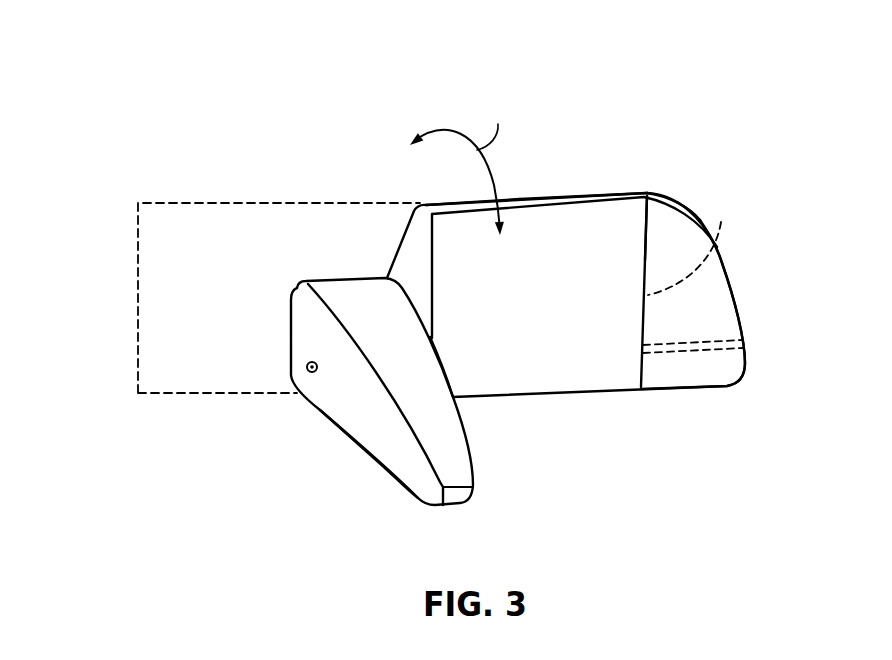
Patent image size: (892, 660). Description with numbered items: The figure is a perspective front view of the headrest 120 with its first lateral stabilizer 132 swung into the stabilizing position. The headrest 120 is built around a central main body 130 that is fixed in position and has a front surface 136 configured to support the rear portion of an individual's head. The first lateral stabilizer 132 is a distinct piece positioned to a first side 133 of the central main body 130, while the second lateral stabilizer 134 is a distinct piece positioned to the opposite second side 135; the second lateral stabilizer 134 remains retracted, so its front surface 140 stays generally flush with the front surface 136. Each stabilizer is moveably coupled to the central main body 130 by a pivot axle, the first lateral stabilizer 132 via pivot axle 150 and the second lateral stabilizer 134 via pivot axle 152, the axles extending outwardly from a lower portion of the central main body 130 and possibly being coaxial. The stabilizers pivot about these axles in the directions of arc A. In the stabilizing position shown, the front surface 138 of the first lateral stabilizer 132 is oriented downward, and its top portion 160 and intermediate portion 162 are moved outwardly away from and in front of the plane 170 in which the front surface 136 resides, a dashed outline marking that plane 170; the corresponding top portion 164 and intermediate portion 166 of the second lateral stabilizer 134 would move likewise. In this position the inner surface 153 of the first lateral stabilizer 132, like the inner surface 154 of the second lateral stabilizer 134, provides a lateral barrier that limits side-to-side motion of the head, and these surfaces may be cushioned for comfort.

The headrest 120 is at (243, 139).
The central main body 130 is at (578, 377).
The first lateral stabilizer 132 is at (343, 420).
The first side 133 is at (435, 257).
The second lateral stabilizer 134 is at (728, 375).
The second side 135 is at (640, 238).
The front surface 136 is at (557, 220).
The front surface 138 is at (380, 477).
The front surface 140 is at (710, 285).
The pivot axle 150 is at (307, 365).
The pivot axle 152 is at (717, 340).
The inner surface 153 is at (443, 370).
The inner surface 154 is at (721, 222).
The top portion 160 is at (453, 505).
The intermediate portion 162 is at (353, 453).
The top portion 164 is at (655, 190).
The intermediate portion 166 is at (722, 262).
The plane 170 is at (137, 312).